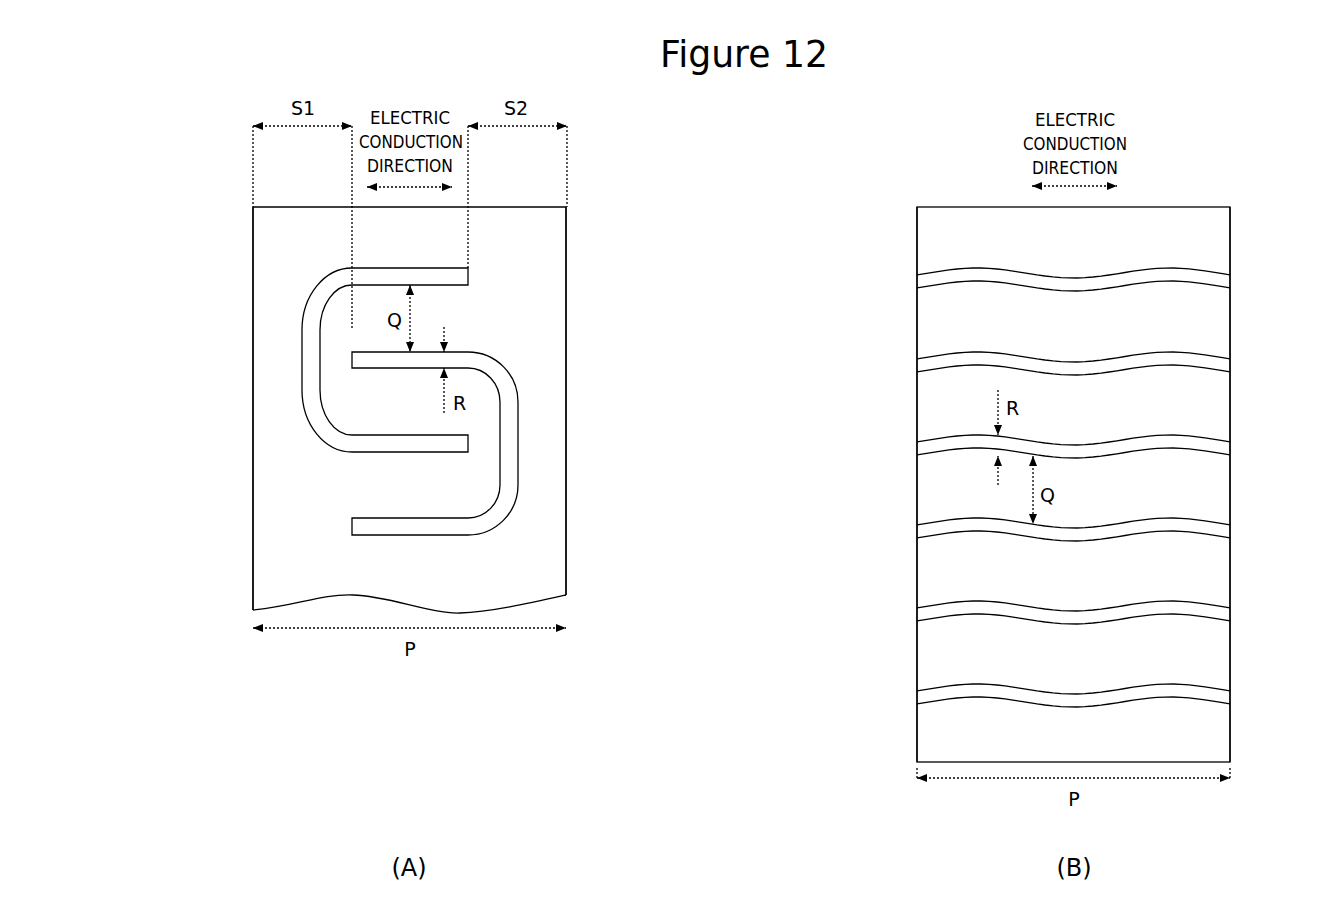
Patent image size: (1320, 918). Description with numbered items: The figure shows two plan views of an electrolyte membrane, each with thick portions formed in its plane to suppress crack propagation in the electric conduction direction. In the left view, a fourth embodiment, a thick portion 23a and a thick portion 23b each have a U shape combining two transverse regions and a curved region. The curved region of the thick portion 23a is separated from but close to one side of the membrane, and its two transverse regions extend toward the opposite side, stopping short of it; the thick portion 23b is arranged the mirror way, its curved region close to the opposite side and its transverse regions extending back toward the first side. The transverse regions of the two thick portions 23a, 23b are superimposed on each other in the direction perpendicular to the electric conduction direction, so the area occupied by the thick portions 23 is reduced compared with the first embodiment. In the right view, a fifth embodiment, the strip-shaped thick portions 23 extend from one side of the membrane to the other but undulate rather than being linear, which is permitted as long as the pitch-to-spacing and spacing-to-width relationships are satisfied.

The thick portions 23 is at (927, 282).
The thick portion 23a is at (312, 362).
The thick portion 23b is at (510, 442).